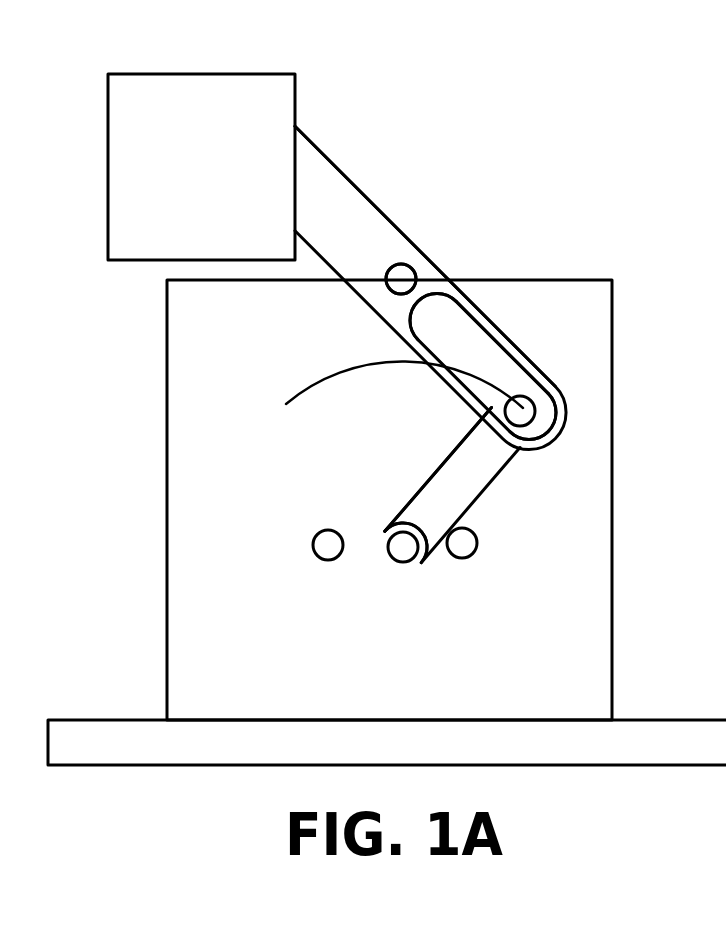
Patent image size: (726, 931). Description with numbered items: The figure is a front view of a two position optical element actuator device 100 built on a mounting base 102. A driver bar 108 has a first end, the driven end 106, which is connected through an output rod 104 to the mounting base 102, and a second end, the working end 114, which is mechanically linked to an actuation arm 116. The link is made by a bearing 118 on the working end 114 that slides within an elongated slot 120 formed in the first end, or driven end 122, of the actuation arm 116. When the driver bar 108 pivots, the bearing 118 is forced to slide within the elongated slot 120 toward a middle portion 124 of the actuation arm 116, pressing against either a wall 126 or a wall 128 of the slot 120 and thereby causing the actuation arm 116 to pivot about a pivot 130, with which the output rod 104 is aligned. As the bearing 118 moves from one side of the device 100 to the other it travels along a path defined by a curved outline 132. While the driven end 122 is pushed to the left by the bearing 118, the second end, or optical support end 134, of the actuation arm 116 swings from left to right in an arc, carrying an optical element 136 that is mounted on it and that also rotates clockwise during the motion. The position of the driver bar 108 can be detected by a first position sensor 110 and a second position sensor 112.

The two position optical element actuator device 100 is at (437, 76).
The mounting base 102 is at (167, 668).
The output rod 104 is at (399, 562).
The first end (driven end) of driver bar 106 is at (384, 540).
The driver bar 108 is at (435, 484).
The first position sensor 110 is at (478, 546).
The second position sensor 112 is at (318, 562).
The second end (working end) of driver bar 114 is at (505, 447).
The actuation arm 116 is at (368, 204).
The bearing 118 is at (535, 418).
The elongated slot 120 is at (468, 346).
The first end (driven end) of actuation arm 122 is at (558, 440).
The middle portion of actuation arm 124 is at (407, 262).
The wall of slot 126 is at (514, 360).
The wall of slot 128 is at (421, 333).
The pivot 130 is at (402, 278).
The curved outline 132 is at (316, 384).
The second end (optical support end) of actuation arm 134 is at (304, 158).
The optical element 136 is at (210, 140).